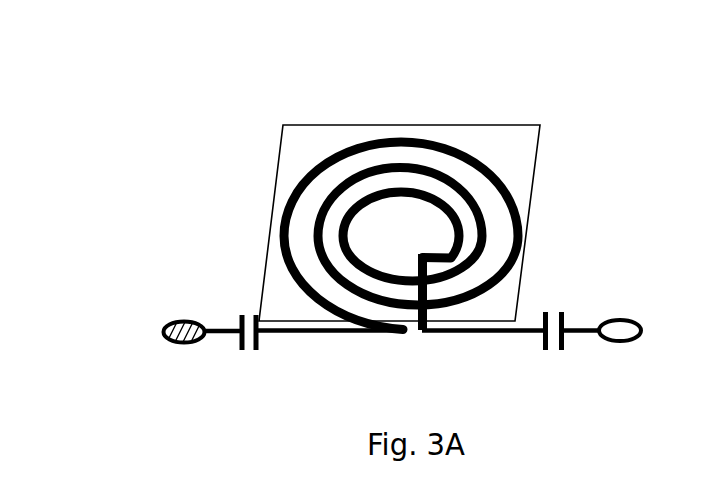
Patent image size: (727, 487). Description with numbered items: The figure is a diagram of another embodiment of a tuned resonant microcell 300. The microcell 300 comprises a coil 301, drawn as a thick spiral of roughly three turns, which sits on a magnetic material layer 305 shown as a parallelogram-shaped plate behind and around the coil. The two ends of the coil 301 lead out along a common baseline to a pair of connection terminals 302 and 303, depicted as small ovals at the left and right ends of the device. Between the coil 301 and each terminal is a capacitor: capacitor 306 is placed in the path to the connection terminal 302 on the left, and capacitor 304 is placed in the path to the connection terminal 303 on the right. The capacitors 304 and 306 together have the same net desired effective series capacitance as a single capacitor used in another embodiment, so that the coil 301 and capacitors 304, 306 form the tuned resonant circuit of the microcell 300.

The microcell 300 is at (207, 52).
The coil 301 is at (380, 139).
The connection terminal 302 is at (183, 321).
The connection terminal 303 is at (602, 322).
The capacitor 304 is at (548, 311).
The magnetic material layer 305 is at (532, 139).
The capacitor 306 is at (250, 313).